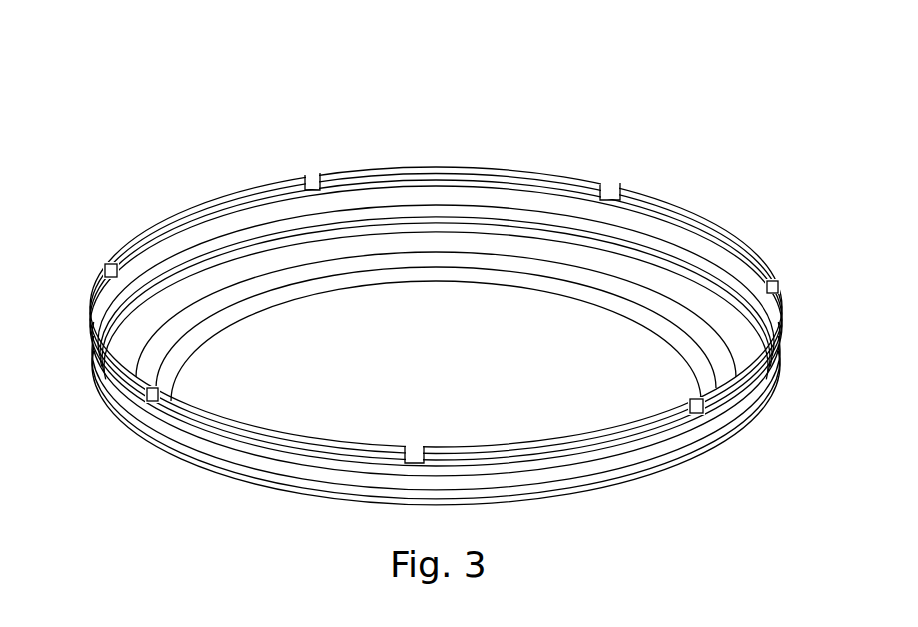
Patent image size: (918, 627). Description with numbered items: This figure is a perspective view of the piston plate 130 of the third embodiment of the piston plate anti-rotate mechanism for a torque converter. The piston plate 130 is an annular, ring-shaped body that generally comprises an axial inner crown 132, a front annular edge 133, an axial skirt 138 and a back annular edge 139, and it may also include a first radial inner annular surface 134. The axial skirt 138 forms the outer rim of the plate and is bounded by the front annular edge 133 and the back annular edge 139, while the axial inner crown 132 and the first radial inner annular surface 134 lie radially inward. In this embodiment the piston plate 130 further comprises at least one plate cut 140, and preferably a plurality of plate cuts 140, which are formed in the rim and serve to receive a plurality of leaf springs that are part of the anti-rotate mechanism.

The piston plate 130 is at (445, 263).
The axial inner crown 132 is at (547, 282).
The front annular edge 133 is at (236, 322).
The first radial inner annular surface 134 is at (680, 298).
The axial skirt 138 is at (660, 227).
The back annular edge 139 is at (715, 225).
The plate cut 140 is at (312, 176).